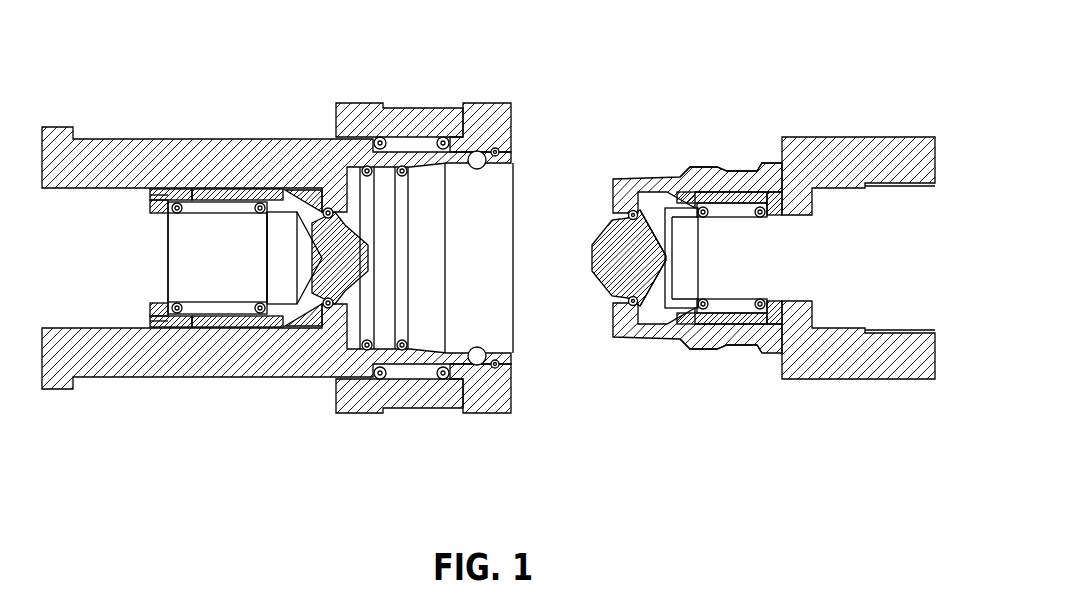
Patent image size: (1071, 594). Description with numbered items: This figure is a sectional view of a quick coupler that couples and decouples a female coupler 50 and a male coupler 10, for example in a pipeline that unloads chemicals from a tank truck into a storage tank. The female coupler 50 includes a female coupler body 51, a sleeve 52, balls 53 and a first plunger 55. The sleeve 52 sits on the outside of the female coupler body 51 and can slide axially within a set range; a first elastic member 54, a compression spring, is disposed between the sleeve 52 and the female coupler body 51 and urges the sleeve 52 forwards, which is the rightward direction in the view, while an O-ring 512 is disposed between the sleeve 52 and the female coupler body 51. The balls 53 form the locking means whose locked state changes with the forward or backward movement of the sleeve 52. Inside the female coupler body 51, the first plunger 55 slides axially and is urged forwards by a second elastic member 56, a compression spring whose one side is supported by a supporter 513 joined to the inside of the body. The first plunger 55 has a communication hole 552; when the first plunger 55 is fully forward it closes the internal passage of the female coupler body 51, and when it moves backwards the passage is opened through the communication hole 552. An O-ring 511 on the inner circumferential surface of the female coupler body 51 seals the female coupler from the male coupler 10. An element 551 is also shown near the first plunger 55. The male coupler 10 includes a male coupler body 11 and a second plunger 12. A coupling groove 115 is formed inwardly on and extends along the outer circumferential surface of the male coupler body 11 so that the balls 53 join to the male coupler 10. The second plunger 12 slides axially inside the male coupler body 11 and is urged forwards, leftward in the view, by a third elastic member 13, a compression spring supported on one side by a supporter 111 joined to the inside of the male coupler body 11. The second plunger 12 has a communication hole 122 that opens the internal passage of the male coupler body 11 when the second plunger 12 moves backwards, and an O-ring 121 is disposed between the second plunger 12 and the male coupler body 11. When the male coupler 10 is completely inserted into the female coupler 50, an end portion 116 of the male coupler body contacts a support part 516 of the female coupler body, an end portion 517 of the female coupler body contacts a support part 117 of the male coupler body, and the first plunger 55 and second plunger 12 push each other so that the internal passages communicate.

The male coupler 10 is at (762, 219).
The male coupler body 11 is at (722, 350).
The supporter 111 is at (760, 350).
The coupling groove 115 is at (722, 167).
The support part 117 is at (775, 150).
The end portion 116 is at (625, 212).
The second plunger 12 is at (606, 310).
The O-ring 121 is at (648, 320).
The communication hole 122 is at (668, 310).
The third elastic member 13 is at (700, 194).
The female coupler 50 is at (292, 261).
The female coupler body 51 is at (230, 378).
The O-ring 511 is at (383, 352).
The O-ring 512 is at (482, 366).
The supporter 513 is at (176, 320).
The support part 516 is at (330, 322).
The end portion 517 is at (500, 366).
The sleeve 52 is at (500, 106).
The balls 53 is at (447, 140).
The first elastic member 54 is at (396, 112).
The first plunger 55 is at (326, 205).
The valve plug 551 is at (290, 308).
The communication hole 552 is at (262, 312).
The second elastic member 56 is at (176, 196).